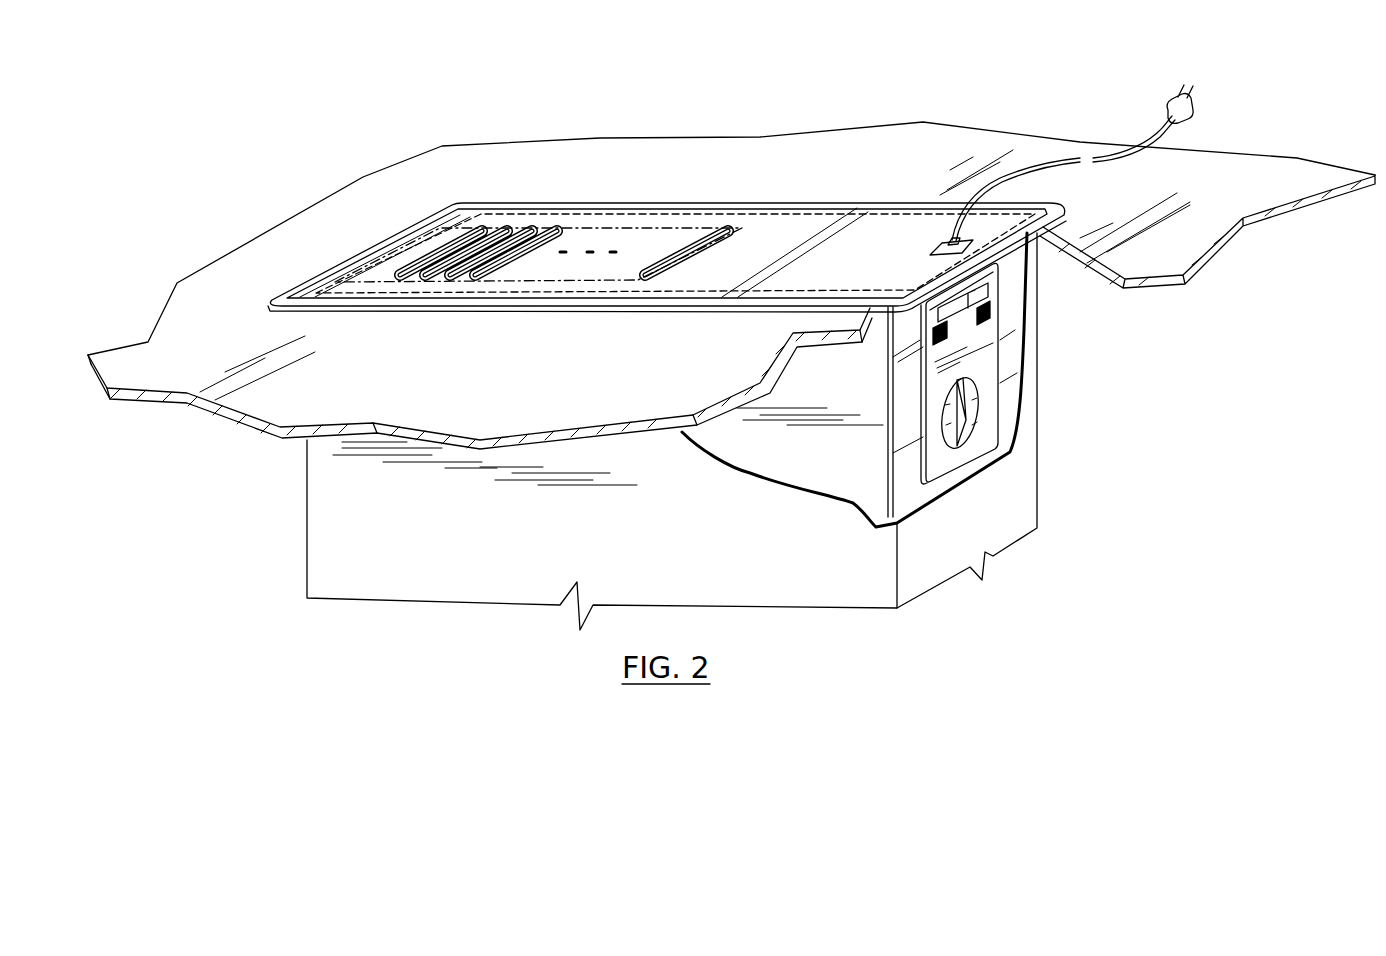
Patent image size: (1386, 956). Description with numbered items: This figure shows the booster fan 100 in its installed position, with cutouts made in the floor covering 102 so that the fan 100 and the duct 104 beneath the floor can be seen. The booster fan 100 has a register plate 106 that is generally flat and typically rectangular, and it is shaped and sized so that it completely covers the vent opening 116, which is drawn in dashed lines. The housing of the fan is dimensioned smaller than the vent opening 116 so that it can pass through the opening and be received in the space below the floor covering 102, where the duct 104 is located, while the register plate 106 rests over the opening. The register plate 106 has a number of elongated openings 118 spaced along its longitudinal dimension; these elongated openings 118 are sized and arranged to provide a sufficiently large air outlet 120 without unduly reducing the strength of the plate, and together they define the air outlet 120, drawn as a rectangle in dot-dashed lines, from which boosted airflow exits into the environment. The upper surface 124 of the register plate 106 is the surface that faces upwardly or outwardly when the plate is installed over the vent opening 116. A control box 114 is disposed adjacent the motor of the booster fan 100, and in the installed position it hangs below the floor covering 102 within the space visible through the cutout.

The booster fan 100 is at (815, 207).
The floor covering 102 is at (265, 405).
The duct 104 is at (1030, 426).
The register plate 106 is at (465, 301).
The control box 114 is at (940, 467).
The vent opening 116 is at (517, 215).
The elongated openings 118 is at (448, 245).
The air outlet 120 is at (545, 280).
The upper surface 124 is at (298, 285).